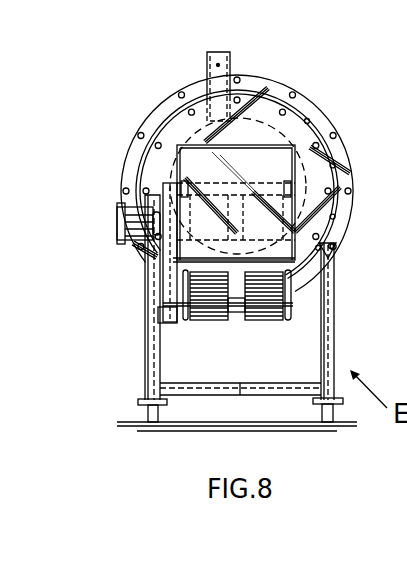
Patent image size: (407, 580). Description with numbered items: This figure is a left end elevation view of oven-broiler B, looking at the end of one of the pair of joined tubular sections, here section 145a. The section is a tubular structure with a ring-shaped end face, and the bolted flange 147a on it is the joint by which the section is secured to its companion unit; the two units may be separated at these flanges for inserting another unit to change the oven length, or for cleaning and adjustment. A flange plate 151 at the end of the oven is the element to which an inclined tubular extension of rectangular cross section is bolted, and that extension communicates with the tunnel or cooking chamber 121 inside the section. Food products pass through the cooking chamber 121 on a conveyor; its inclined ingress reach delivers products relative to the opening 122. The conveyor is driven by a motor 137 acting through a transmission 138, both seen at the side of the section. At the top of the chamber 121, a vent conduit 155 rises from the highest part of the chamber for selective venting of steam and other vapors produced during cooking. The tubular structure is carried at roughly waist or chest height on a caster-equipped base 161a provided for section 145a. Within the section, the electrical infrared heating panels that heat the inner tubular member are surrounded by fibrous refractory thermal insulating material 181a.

The vent conduit 155 is at (232, 53).
The flange 147a is at (250, 74).
The flange plate 151 is at (270, 98).
The oven section 145a is at (329, 107).
The fibrous thermal insulating material 181a is at (318, 125).
The cooking chamber 121 is at (278, 168).
The motor 137 is at (123, 243).
The transmission 138 is at (158, 322).
The caster-equipped base 161a is at (138, 374).
The opening 122 is at (363, 321).